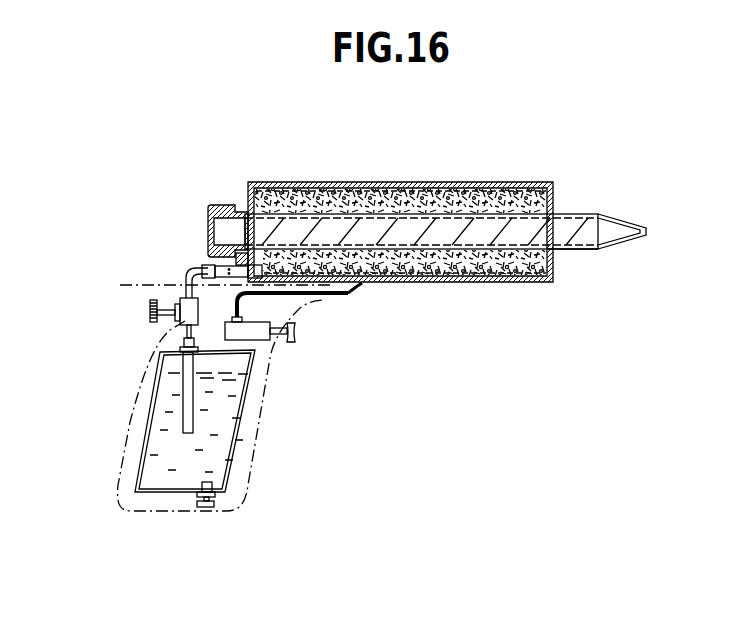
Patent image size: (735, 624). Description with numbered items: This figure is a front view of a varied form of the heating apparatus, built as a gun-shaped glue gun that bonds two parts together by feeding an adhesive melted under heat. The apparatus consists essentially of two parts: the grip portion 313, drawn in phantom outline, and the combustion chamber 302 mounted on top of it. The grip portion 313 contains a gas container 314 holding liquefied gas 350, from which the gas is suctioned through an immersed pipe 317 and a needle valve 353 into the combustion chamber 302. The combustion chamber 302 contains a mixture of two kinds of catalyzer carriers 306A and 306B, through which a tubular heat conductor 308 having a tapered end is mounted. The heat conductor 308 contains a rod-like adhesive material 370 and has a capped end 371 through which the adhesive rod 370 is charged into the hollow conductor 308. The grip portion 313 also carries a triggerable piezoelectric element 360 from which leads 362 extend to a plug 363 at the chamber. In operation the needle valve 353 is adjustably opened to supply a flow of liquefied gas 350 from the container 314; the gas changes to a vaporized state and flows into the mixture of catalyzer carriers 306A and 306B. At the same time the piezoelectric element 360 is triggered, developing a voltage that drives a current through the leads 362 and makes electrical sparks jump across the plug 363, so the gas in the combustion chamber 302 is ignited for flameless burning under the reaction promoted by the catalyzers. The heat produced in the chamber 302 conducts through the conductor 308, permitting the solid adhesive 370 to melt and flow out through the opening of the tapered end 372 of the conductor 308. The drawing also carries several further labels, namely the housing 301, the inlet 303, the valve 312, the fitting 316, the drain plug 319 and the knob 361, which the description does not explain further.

The housing 301 is at (279, 183).
The combustion chamber 302 is at (397, 184).
The inlet port 303 is at (236, 262).
The catalyzer carrier 306A is at (482, 195).
The catalyzer carrier 306B is at (528, 197).
The tubular heat conductor 308 is at (560, 252).
The valve 312 is at (178, 299).
The grip portion 313 is at (260, 413).
The gas container 314 is at (143, 458).
The supply tube and fitting 316 is at (186, 274).
The immersed pipe 317 is at (182, 388).
The drain plug 319 is at (203, 507).
The gas 350 is at (165, 482).
The needle valve 353 is at (150, 312).
The piezoelectric element 360 is at (258, 335).
The pump knob 361 is at (296, 332).
The leads 362 is at (350, 293).
The plug 363 is at (360, 287).
The rod-like adhesive material 370 is at (560, 225).
The capped end 371 is at (213, 208).
The tapered end 372 is at (628, 238).